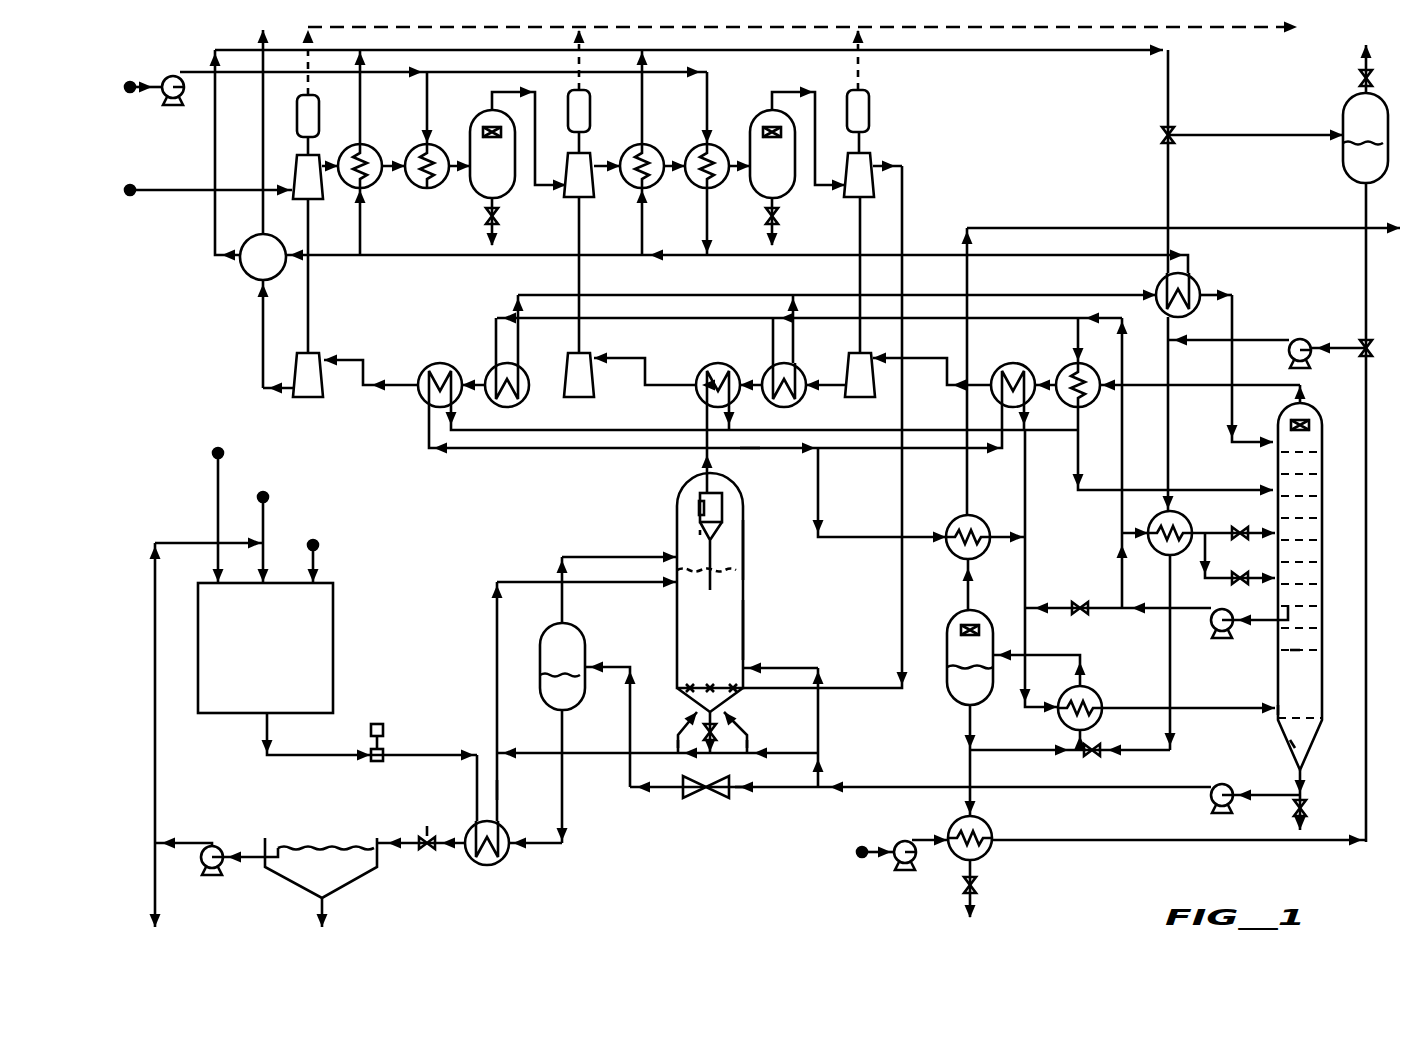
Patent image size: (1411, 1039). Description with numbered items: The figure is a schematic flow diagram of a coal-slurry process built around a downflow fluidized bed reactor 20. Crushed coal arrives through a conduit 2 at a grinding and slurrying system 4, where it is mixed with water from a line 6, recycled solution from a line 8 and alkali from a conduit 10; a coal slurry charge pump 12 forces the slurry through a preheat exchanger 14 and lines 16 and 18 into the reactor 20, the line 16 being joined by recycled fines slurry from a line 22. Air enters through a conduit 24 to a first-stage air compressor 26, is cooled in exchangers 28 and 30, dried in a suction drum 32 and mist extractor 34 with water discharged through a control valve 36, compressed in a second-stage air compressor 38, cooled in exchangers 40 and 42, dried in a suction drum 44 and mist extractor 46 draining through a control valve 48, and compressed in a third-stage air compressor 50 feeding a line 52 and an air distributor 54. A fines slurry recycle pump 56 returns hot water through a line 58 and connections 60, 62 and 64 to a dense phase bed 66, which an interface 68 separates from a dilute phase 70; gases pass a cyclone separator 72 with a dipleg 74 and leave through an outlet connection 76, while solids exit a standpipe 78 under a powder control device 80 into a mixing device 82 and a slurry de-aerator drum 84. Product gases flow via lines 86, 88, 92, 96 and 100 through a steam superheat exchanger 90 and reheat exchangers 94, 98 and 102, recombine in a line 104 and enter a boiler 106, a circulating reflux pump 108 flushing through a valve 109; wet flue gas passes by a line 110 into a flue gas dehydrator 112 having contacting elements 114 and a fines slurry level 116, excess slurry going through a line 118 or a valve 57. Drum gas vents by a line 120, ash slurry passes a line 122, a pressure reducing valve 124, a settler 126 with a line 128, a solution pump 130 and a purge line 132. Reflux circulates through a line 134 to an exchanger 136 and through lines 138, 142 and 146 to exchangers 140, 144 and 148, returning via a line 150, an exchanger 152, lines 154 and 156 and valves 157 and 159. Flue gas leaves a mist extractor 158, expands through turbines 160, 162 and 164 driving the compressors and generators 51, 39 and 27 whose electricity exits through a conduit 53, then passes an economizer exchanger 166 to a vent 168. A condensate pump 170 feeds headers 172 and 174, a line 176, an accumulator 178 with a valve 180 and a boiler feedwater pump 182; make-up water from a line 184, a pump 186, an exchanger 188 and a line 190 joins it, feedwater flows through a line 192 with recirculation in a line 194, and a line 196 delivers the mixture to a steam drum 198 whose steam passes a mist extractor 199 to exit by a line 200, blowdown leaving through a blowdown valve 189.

The conduit 2 is at (218, 492).
The grinding and slurrying system 4 is at (333, 651).
The line 6 is at (263, 523).
The line 8 is at (192, 543).
The conduit 10 is at (313, 560).
The coal slurry charge pump 12 is at (383, 728).
The preheat exchanger 14 is at (487, 865).
The line 16 is at (499, 790).
The line 18 is at (497, 622).
The fluidized bed reactor 20 is at (677, 632).
The line 22 is at (545, 753).
The conduit 24 is at (172, 200).
The first-stage air compressor 26 is at (322, 197).
The generator 27 is at (318, 120).
The first section of first-stage air-condensate exchanger 28 is at (368, 198).
The second section of first-stage air-condensate exchanger 30 is at (372, 144).
The second-stage air compressor suction drum 32 is at (478, 200).
The mist extractor 34 is at (484, 132).
The control valve 36 is at (498, 218).
The second-stage air compressor 38 is at (594, 197).
The generator 39 is at (590, 120).
The first section of second-stage air-condensate exchanger 40 is at (648, 196).
The second section of second-stage air-condensate exchanger 42 is at (700, 144).
The third-stage air compressor suction drum 44 is at (760, 200).
The mist extractor 46 is at (763, 132).
The control valve 48 is at (778, 218).
The third-stage air compressor 50 is at (872, 197).
The electric generator 51 is at (869, 120).
The line 52 is at (908, 185).
The conduit 53 is at (1213, 27).
The air distributor 54 is at (690, 686).
The fines slurry recycle pump 56 is at (1212, 800).
The valve 57 is at (1308, 812).
The line 58 is at (827, 780).
The connection 60 is at (820, 705).
The connection 62 is at (747, 735).
The connection 64 is at (680, 735).
The dense phase bed of fluidized particles 66 is at (740, 636).
The interface 68 is at (740, 572).
The dilute phase 70 is at (740, 545).
The cyclone separator 72 is at (735, 512).
The dipleg 74 is at (700, 535).
The outlet connection 76 is at (697, 466).
The standpipe 78 is at (745, 755).
The powder control device 80 is at (705, 745).
The mixing device 82 is at (705, 800).
The slurry de-aerator drum 84 is at (573, 636).
The line 86 is at (752, 448).
The line 88 is at (820, 487).
The steam superheat exchanger 90 is at (955, 552).
The line 92 is at (912, 460).
The first-stage flue gas reheat exchanger 94 is at (1008, 363).
The line 96 is at (705, 415).
The second-stage flue gas reheat exchanger 98 is at (705, 363).
The line 100 is at (552, 448).
The third-stage flue gas reheat exchanger 102 is at (425, 363).
The line 104 is at (1025, 570).
The boiler 106 is at (1097, 720).
The circulating reflux pump 108 is at (1215, 632).
The valve 109 is at (1080, 601).
The line 110 is at (1215, 708).
The flue gas dehydrator 112 is at (1278, 712).
The vapor-liquid contacting elements 114 is at (1290, 650).
The fines slurry level 116 is at (1295, 738).
The line 118 is at (750, 790).
The line 120 is at (588, 557).
The line 122 is at (565, 815).
The pressure reducing valve 124 is at (423, 832).
The settler 126 is at (348, 880).
The line 128 is at (322, 912).
The solution pump 130 is at (218, 840).
The line 132 is at (160, 895).
The line 134 is at (1135, 533).
The circulating reflux-boiler feedwater exchanger 136 is at (1158, 551).
The line 138 is at (1078, 340).
The first-stage circulating reflux-flue gas exchanger 140 is at (1092, 407).
The line 142 is at (775, 355).
The second-stage circulating reflux-flue gas exchanger 144 is at (800, 394).
The line 146 is at (498, 355).
The third-stage circulating reflux-flue gas exchanger 148 is at (522, 402).
The line 150 is at (1042, 295).
The circulating reflux-condensate exchanger 152 is at (1170, 273).
The line 154 is at (1232, 410).
The line 156 is at (1078, 458).
The valve 157 is at (1240, 527).
The mist extractor 158 is at (1308, 422).
The valve 159 is at (1240, 572).
The first-stage flue gas turbine 160 is at (850, 358).
The second-stage flue gas turbine 162 is at (574, 358).
The third-stage flue gas turbine 164 is at (310, 400).
The economizer exchanger 166 is at (246, 280).
The vent 168 is at (263, 124).
The condensate pump 170 is at (172, 99).
The header 172 is at (612, 256).
The header 174 is at (1040, 50).
The line 176 is at (1262, 135).
The boiler feedwater accumulator 178 is at (1343, 168).
The valve 180 is at (1360, 78).
The boiler feedwater pump 182 is at (1300, 338).
The line 184 is at (870, 865).
The boiler make-up water pump 186 is at (912, 838).
The blowdown make-up water exchanger 188 is at (988, 855).
The blowdown valve 189 is at (963, 885).
The line 190 is at (1060, 840).
The line 192 is at (1170, 630).
The line 194 is at (1030, 750).
The line 196 is at (1082, 665).
The steam drum 198 is at (950, 700).
The mist extractor 199 is at (961, 630).
The line 200 is at (1110, 228).